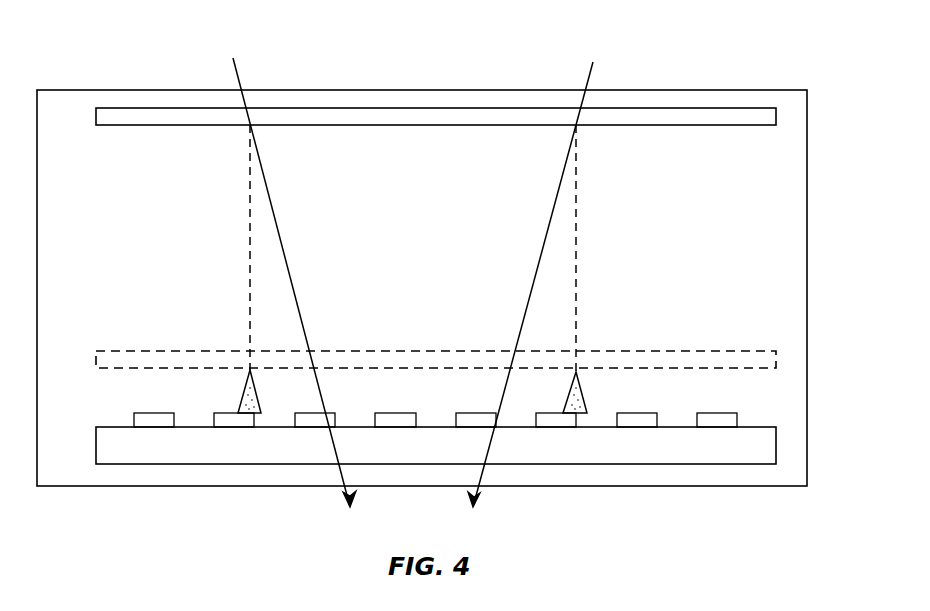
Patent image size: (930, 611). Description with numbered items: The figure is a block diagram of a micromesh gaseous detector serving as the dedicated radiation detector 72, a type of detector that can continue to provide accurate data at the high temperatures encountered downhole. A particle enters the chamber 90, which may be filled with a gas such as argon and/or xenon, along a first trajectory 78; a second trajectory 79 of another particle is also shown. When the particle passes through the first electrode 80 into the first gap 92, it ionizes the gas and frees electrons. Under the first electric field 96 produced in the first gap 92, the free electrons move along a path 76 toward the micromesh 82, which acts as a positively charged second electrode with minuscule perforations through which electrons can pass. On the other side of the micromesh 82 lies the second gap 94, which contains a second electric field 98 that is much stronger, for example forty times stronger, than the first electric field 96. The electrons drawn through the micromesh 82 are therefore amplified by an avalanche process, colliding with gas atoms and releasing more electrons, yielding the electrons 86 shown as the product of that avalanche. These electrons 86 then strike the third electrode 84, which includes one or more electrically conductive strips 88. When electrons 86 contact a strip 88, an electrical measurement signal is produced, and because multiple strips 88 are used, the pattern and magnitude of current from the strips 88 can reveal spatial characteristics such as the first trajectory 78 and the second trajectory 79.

The dedicated radiation detector 72 is at (422, 267).
The path 76 is at (249, 242).
The first trajectory 78 is at (588, 63).
The second trajectory 79 is at (238, 74).
The first electrode 80 is at (433, 125).
The micromesh 82 is at (438, 353).
The third electrode 84 is at (434, 465).
The electrons 86 is at (242, 396).
The strips 88 is at (153, 413).
The chamber 90 is at (415, 91).
The first gap 92 is at (195, 269).
The second gap 94 is at (128, 391).
The first electric field 96 is at (698, 272).
The second electric field 98 is at (698, 393).